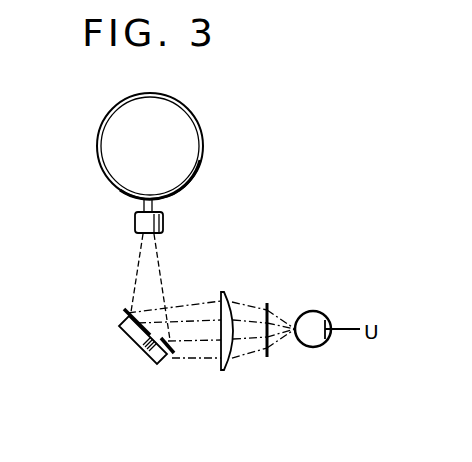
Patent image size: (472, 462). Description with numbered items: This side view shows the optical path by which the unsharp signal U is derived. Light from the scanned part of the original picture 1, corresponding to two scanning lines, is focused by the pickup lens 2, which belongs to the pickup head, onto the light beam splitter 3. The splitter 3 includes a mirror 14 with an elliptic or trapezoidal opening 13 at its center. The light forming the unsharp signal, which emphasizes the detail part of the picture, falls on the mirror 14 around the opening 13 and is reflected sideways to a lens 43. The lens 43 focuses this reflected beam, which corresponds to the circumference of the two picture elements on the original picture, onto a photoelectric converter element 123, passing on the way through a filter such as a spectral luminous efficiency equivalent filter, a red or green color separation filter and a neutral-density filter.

The circular frame / ring 1 is at (106, 177).
The pickup lens 2 is at (135, 226).
The light beam splitter 3 is at (128, 343).
The opening 13 is at (150, 328).
The mirror 14 is at (170, 346).
The lens 43 is at (223, 292).
The photoelectric converter element 123 is at (319, 312).